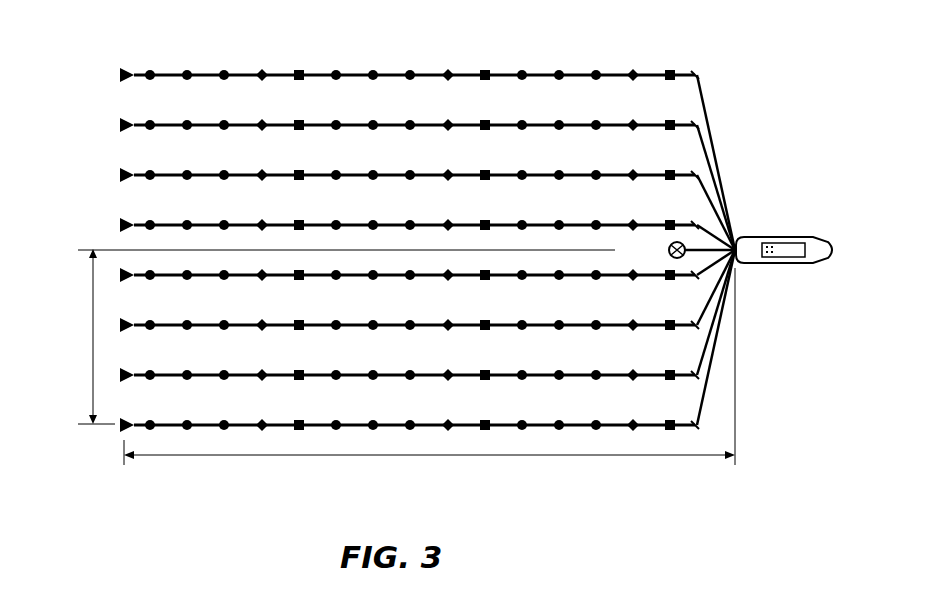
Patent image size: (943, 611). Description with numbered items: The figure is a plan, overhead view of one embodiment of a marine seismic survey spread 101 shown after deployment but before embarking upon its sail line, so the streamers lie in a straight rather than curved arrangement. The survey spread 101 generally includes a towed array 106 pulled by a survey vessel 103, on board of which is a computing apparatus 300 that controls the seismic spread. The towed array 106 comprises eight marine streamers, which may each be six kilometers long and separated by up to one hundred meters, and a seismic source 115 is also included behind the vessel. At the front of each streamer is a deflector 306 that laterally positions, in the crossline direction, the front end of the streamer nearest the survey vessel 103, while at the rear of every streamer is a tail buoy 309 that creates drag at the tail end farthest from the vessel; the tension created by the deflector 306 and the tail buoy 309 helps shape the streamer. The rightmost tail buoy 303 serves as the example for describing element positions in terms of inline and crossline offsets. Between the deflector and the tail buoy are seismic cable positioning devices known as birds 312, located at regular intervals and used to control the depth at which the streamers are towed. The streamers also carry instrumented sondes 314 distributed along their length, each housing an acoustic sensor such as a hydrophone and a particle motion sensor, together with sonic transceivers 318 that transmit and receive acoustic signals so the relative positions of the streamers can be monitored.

The survey spread 101 is at (742, 40).
The survey vessel 103 is at (781, 241).
The towed array 106 is at (66, 64).
The seismic source 115 is at (663, 252).
The computing apparatus 300 is at (770, 259).
The tail buoy 303 is at (119, 429).
The deflector 306 is at (703, 82).
The tail buoy 309 is at (144, 55).
The birds 312 is at (650, 57).
The instrumented sondes 314 is at (540, 57).
The sonic transceivers 318 is at (430, 57).